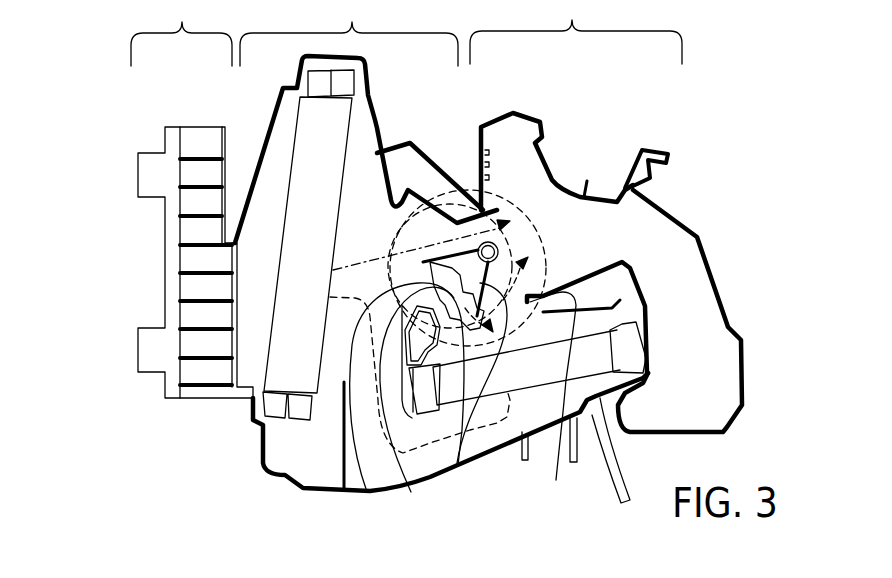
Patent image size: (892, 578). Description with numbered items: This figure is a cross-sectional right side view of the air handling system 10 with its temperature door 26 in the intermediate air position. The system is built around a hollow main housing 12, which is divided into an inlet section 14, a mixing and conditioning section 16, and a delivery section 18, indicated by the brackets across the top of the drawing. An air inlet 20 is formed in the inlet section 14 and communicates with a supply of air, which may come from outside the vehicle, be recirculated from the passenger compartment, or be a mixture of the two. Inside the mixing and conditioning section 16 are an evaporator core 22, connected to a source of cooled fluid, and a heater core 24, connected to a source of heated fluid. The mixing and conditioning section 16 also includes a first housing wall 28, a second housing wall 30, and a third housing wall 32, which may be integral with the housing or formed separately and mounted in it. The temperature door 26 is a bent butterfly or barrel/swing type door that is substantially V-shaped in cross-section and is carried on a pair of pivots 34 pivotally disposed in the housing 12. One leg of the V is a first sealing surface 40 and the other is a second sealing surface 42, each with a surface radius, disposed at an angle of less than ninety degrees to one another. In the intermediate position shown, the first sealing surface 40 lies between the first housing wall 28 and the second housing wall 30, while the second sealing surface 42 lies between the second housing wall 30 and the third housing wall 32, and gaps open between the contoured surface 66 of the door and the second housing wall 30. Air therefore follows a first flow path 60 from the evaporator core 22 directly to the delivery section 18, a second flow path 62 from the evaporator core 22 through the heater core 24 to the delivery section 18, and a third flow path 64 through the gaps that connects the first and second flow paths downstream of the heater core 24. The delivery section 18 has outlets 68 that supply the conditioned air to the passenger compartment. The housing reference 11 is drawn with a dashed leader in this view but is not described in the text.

The air handling system 10 is at (100, 112).
The latch housing 11 is at (557, 172).
The main housing 12 is at (734, 313).
The inlet section 14 is at (181, 33).
The mixing and conditioning section 16 is at (366, 121).
The delivery section 18 is at (467, 251).
The air inlet 20 is at (163, 262).
The evaporator core 22 is at (320, 262).
The heater core 24 is at (533, 381).
The temperature door 26 is at (505, 242).
The first housing wall 28 is at (556, 480).
The second housing wall 30 is at (411, 492).
The third housing wall 32 is at (444, 255).
The pivots 34 is at (537, 235).
The first sealing surface 40 is at (457, 463).
The second sealing surface 42 is at (447, 177).
The first flow path 60 is at (370, 300).
The second flow path 62 is at (475, 400).
The third flow path 64 is at (465, 258).
The contoured surface 66 is at (369, 518).
The outlets 68 is at (478, 167).